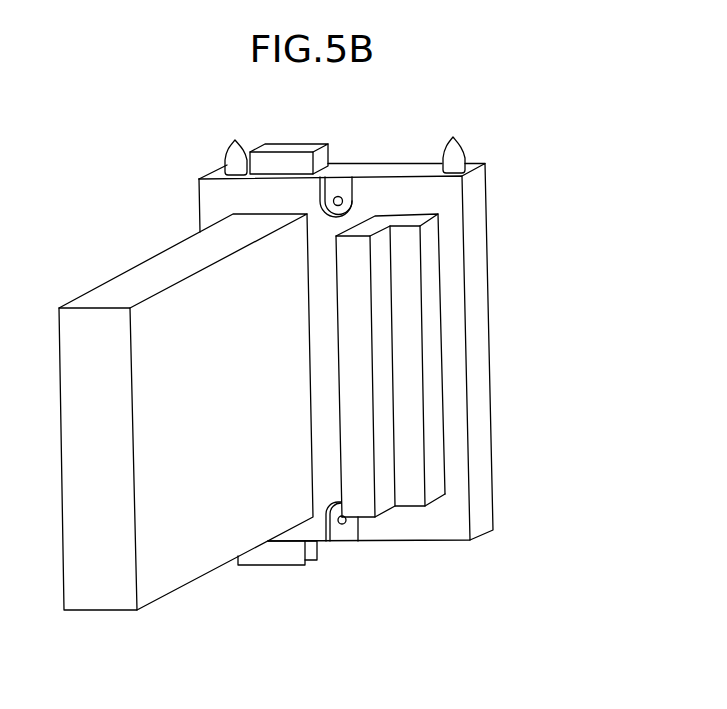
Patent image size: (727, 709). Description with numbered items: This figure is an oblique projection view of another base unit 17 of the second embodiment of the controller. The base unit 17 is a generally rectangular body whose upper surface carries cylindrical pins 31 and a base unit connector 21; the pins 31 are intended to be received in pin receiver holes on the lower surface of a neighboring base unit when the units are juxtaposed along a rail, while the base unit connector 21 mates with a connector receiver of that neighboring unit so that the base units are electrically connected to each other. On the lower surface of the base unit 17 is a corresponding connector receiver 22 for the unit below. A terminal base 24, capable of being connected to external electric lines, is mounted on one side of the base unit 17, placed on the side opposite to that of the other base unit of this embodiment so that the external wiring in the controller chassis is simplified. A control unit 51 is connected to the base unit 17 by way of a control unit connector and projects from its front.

The base unit 17 is at (480, 343).
The base unit connector 21 is at (287, 152).
The connector receiver 22 is at (270, 557).
The terminal base 24 is at (407, 495).
The cylindrical pin 31 is at (233, 152).
The control unit 51 is at (95, 600).